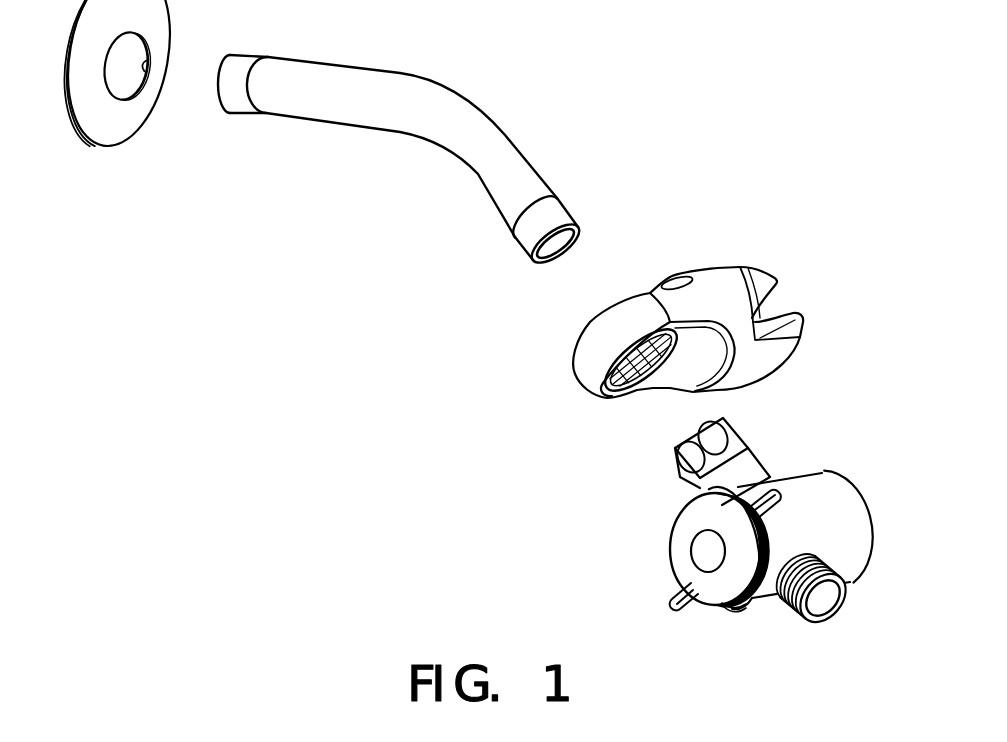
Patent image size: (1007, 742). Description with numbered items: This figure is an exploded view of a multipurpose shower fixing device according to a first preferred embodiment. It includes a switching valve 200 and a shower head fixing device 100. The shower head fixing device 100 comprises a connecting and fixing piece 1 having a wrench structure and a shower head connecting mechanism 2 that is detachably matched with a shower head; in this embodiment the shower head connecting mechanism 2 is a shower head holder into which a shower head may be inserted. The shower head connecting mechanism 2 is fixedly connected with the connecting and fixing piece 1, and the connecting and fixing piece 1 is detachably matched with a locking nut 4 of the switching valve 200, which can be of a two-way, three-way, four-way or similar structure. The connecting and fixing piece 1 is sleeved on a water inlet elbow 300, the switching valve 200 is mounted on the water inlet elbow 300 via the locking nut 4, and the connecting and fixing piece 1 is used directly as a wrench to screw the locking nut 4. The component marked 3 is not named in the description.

The shower head fixing device 100 is at (655, 313).
The connecting and fixing piece 1 is at (603, 355).
The shower head connecting mechanism 2 is at (743, 266).
The spray outlet 3 is at (637, 387).
The locking nut 4 is at (718, 443).
The switching valve 200 is at (794, 513).
The water inlet elbow 300 is at (420, 105).